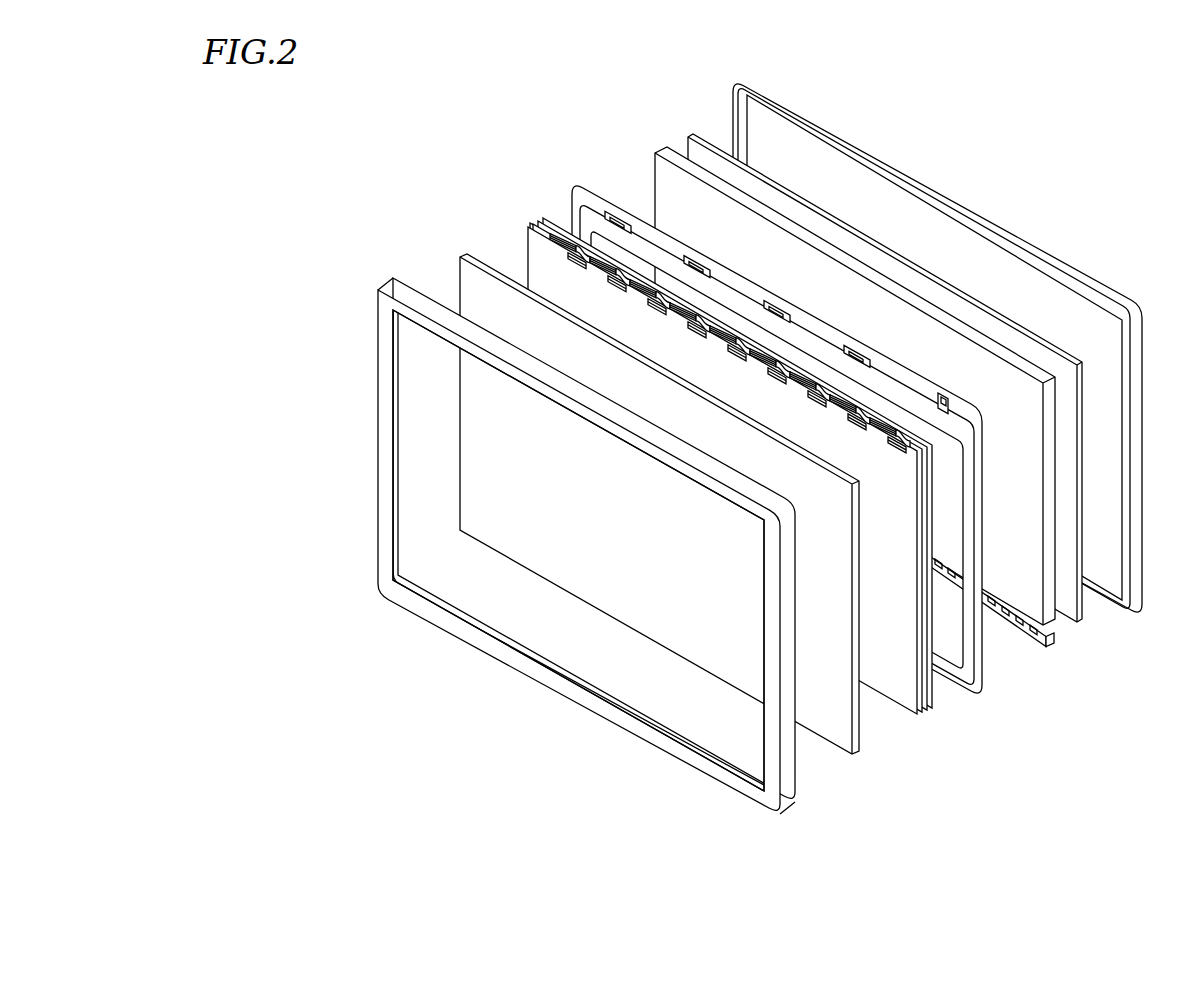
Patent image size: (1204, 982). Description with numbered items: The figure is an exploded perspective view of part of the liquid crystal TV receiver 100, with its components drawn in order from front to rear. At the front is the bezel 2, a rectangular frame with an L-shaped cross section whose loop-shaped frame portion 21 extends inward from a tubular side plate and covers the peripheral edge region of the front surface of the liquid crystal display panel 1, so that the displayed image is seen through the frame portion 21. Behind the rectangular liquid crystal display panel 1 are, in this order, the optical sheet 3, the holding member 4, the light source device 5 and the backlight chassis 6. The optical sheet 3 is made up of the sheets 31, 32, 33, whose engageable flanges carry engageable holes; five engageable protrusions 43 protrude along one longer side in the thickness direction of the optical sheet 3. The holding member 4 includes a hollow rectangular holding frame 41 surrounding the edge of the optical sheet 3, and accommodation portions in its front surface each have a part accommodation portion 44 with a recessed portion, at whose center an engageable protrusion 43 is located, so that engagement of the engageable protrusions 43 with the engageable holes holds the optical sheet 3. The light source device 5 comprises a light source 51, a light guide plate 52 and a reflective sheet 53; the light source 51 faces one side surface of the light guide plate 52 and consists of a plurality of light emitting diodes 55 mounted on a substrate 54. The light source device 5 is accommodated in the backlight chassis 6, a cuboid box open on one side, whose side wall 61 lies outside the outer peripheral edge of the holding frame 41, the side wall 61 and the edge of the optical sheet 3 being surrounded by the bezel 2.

The liquid crystal TV receiver 100 is at (415, 188).
The liquid crystal display panel 1 is at (838, 747).
The bezel 2 is at (546, 546).
The frame portion 21 is at (381, 350).
The optical sheet 3 is at (745, 516).
The optical sheet 31 is at (929, 717).
The optical sheet 32 is at (923, 717).
The optical sheet 33 is at (883, 697).
The holding member 4 is at (847, 427).
The holding frame 41 is at (574, 196).
The engageable protrusion 43 is at (697, 256).
The part accommodation portion 44 is at (566, 221).
The light source device 5 is at (911, 464).
The light source 51 is at (1004, 653).
The light guide plate 52 is at (1060, 628).
The reflective sheet 53 is at (1084, 624).
The substrate 54 is at (1050, 645).
The light emitting diodes 55 is at (986, 631).
The backlight chassis 6 is at (962, 348).
The side wall 61 is at (947, 199).